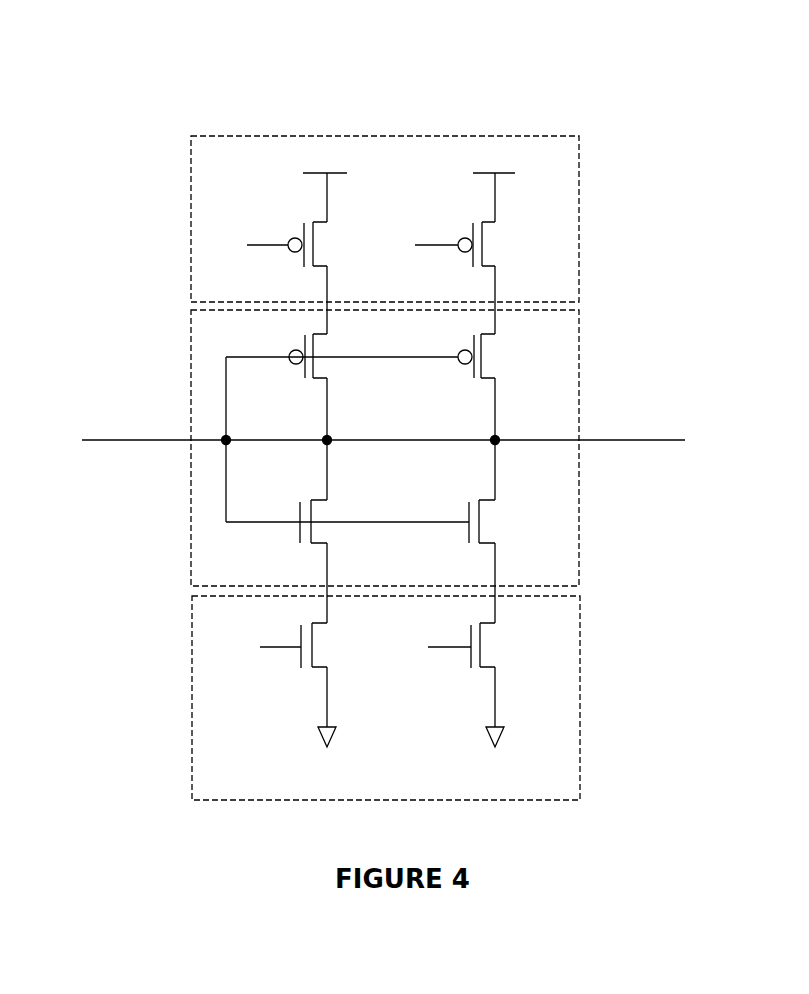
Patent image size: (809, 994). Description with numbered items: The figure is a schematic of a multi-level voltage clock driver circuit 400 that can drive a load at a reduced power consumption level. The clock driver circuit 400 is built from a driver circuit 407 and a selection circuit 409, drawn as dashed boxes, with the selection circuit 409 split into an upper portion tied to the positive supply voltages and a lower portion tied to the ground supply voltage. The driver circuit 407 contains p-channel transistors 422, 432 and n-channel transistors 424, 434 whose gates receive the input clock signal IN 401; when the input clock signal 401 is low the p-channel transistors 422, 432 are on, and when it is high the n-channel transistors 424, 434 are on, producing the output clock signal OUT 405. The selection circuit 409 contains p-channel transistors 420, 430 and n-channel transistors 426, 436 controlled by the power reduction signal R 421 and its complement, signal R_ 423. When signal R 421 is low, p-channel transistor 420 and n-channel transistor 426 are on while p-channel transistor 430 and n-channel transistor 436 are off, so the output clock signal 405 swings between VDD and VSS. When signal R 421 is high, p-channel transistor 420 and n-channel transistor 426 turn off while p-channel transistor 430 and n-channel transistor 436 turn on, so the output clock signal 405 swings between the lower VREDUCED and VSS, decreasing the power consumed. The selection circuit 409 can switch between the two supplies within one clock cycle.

The clock driver circuit 400 is at (708, 120).
The input clock signal IN 401 is at (127, 440).
The output clock signal OUT 405 is at (637, 439).
The driver circuit 407 is at (191, 325).
The selection circuit 409 is at (191, 150).
The p-channel transistor 420 is at (298, 258).
The signal R 421 is at (272, 245).
The p-channel transistor 422 is at (299, 371).
The signal R_ 423 is at (441, 245).
The n-channel transistor 424 is at (294, 536).
The n-channel transistor 426 is at (296, 660).
The p-channel transistor 430 is at (467, 258).
The p-channel transistor 432 is at (468, 371).
The n-channel transistor 434 is at (463, 536).
The n-channel transistor 436 is at (465, 660).